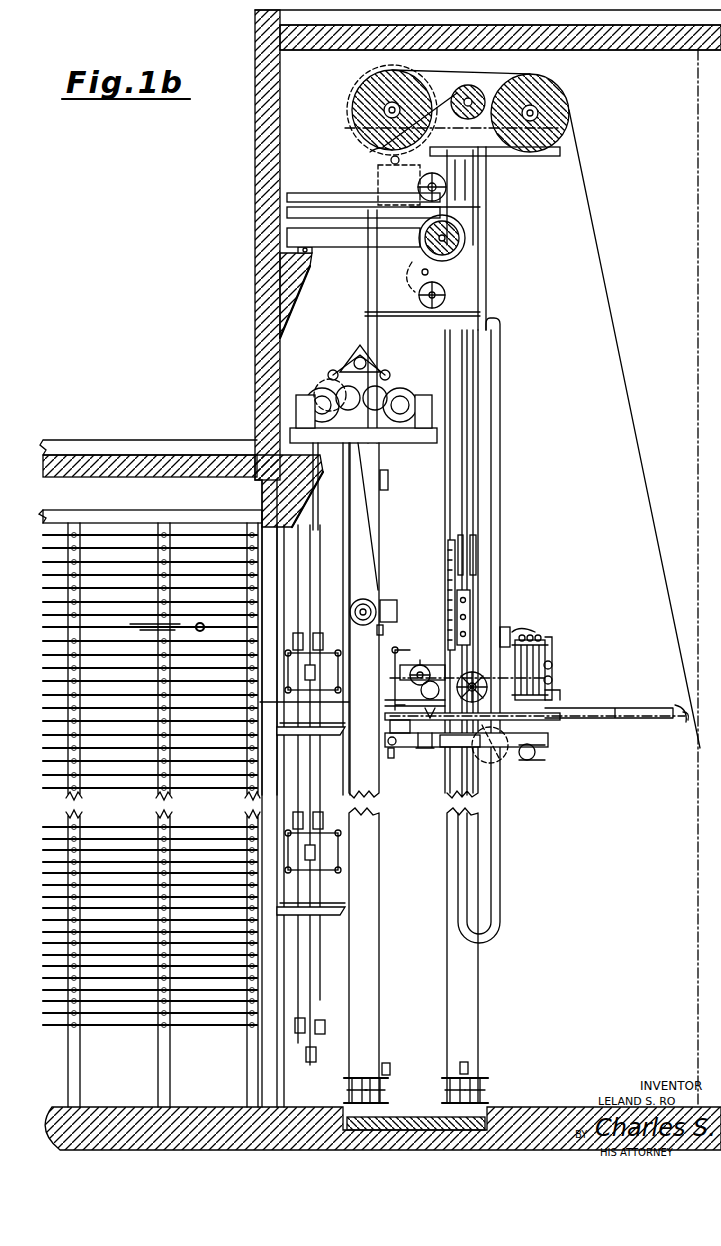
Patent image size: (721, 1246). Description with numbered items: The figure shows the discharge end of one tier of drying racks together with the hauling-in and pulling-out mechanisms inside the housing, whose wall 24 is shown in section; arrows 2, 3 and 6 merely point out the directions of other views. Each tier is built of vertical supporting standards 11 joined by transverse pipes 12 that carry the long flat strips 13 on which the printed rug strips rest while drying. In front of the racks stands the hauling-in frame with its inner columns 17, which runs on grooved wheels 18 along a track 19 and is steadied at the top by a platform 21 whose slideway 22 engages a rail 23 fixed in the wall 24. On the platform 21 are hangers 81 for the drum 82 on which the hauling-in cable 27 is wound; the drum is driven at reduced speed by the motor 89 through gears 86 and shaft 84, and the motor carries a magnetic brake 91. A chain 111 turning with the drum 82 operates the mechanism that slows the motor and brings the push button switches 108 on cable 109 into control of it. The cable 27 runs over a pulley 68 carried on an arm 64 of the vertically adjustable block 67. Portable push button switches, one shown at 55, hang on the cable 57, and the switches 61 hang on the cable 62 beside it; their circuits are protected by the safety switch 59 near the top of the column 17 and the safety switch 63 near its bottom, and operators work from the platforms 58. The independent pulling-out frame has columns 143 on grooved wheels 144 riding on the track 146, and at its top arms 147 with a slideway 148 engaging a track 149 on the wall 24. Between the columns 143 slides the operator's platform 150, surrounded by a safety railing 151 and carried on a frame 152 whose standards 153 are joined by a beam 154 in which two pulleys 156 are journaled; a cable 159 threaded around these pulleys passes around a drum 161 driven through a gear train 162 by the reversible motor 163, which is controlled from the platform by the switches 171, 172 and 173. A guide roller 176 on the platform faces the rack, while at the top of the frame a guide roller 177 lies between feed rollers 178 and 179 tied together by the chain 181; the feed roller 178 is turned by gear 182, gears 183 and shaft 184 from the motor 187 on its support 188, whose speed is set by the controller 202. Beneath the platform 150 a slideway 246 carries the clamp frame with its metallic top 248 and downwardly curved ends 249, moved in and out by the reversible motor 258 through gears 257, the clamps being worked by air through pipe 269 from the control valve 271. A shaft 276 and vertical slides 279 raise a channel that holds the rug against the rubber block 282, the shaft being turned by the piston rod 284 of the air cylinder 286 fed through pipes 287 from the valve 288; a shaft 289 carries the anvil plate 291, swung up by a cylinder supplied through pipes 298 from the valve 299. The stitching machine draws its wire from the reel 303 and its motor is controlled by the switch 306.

The section line arrow 2 is at (356, 316).
The section line arrow 3 is at (521, 389).
The view arrow 6 is at (618, 177).
The vertical supporting standards 11 is at (165, 1048).
The pipes 12 is at (250, 1027).
The flat strips 13 is at (228, 825).
The inner columns 17 is at (380, 909).
The grooved wheels 18 is at (352, 1075).
The track 19 is at (365, 1118).
The platform 21 is at (405, 443).
The slideway 22 is at (310, 447).
The rail 23 is at (289, 491).
The wall 24 is at (264, 409).
The hauling-in cable 27 is at (372, 528).
The guide frame 55 is at (315, 823).
The cable 57 is at (311, 963).
The platforms 58 is at (330, 900).
The switch 59 is at (388, 483).
The portable push button switches 61 is at (302, 812).
The cable 62 is at (302, 768).
The safety switch 63 is at (390, 1071).
The arm 64 is at (398, 603).
The block 67 is at (384, 636).
The pulley 68 is at (352, 605).
The hangers 81 is at (404, 384).
The drum 82 is at (395, 392).
The shaft 84 is at (380, 366).
The gears 86 is at (368, 362).
The motor 89 is at (432, 409).
The magnetic brake 91 is at (373, 403).
The push button switches 108 is at (318, 1035).
The cable 109 is at (322, 1018).
The chain 111 is at (364, 354).
The vertical columns 143 is at (478, 975).
The grooved wheels 144 is at (465, 1075).
The track 146 is at (465, 1112).
The arms 147 is at (345, 238).
The slideway 148 is at (298, 249).
The track 149 is at (292, 270).
The platform 150 is at (545, 701).
The safety railing 151 is at (548, 660).
The frame 152 is at (548, 743).
The standards 153 is at (450, 578).
The beam 154 is at (476, 545).
The pulleys 156 is at (463, 540).
The cable 159 is at (478, 446).
The drum 161 is at (465, 239).
The gear train 162 is at (415, 270).
The reversible motor 163 is at (419, 298).
The switch 171 is at (470, 598).
The start and stop switch 172 is at (470, 630).
The switch 173 is at (470, 614).
The guide roller 176 is at (465, 672).
The guide roller 177 is at (472, 86).
The feed roller 178 is at (375, 100).
The feed roller 179 is at (552, 92).
The chain 181 is at (445, 92).
The gear 182 is at (350, 136).
The gears 183 is at (370, 153).
The shaft 184 is at (390, 165).
The motor 187 is at (412, 159).
The support 188 is at (470, 200).
The controller 202 is at (510, 635).
The slideway 246 is at (392, 728).
The metallic top 248 is at (623, 719).
The end 249 is at (683, 720).
The gears 257 is at (496, 752).
The reversible motor 258 is at (536, 757).
The pipe 269 is at (560, 695).
The control valve 271 is at (528, 632).
The shaft 276 is at (391, 758).
The slide 279 is at (394, 746).
The rubber block 282 is at (395, 693).
The piston rod 284 is at (480, 748).
The air cylinder 286 is at (428, 750).
The pipes 287 is at (552, 681).
The valve 288 is at (540, 636).
The shaft 289 is at (417, 720).
The plate 291 is at (395, 706).
The pipes 298 is at (552, 667).
The valve 299 is at (552, 640).
The reel 303 is at (425, 663).
The switch 306 is at (400, 668).